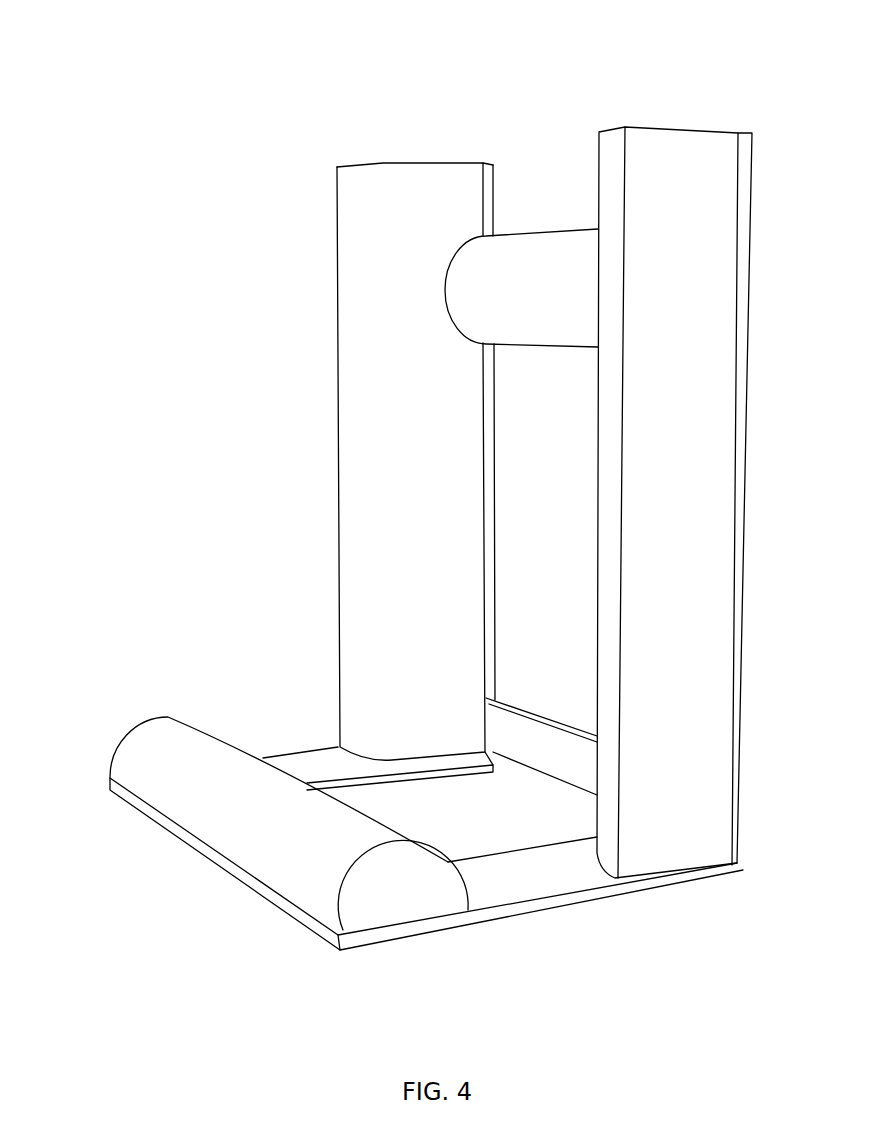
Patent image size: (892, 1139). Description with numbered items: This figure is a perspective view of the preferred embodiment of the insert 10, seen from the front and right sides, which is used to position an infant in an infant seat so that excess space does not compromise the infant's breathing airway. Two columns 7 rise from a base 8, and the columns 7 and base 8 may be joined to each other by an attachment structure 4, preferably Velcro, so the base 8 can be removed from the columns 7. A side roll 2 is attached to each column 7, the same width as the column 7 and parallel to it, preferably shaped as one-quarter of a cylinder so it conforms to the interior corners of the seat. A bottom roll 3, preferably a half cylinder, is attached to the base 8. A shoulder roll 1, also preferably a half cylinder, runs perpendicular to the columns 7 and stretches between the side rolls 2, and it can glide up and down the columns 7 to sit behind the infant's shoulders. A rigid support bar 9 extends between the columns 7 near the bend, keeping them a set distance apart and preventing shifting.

The insert 10 is at (279, 62).
The shoulder roll 1 is at (548, 347).
The side roll 2 is at (337, 252).
The bottom roll 3 is at (142, 722).
The attachment structure 4 is at (740, 857).
The column 7 is at (493, 175).
The base 8 is at (268, 905).
The support bar 9 is at (555, 725).